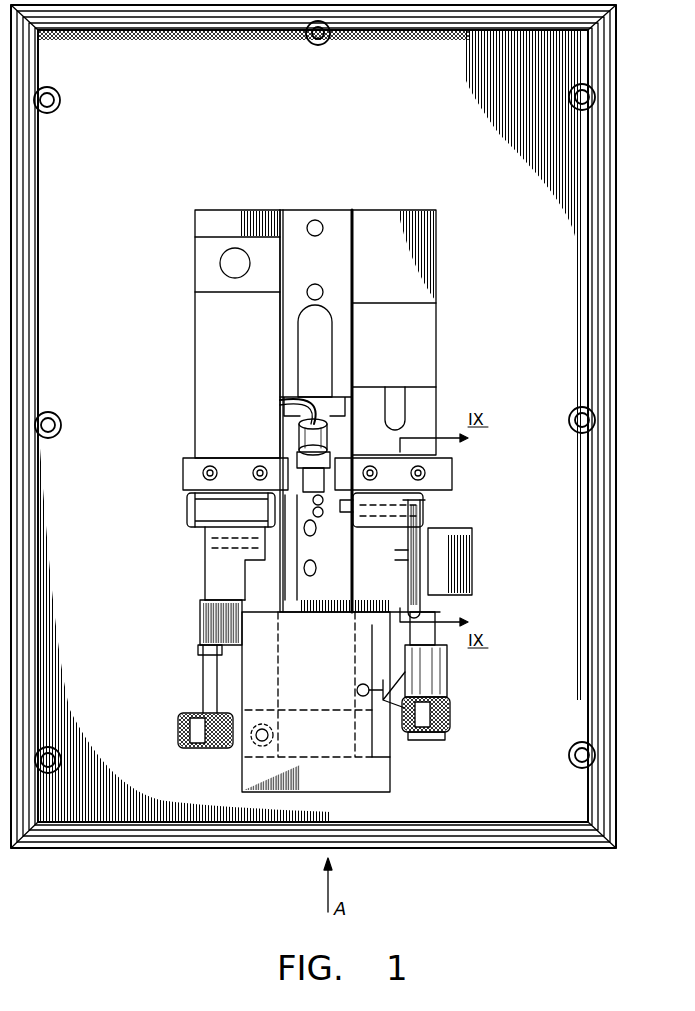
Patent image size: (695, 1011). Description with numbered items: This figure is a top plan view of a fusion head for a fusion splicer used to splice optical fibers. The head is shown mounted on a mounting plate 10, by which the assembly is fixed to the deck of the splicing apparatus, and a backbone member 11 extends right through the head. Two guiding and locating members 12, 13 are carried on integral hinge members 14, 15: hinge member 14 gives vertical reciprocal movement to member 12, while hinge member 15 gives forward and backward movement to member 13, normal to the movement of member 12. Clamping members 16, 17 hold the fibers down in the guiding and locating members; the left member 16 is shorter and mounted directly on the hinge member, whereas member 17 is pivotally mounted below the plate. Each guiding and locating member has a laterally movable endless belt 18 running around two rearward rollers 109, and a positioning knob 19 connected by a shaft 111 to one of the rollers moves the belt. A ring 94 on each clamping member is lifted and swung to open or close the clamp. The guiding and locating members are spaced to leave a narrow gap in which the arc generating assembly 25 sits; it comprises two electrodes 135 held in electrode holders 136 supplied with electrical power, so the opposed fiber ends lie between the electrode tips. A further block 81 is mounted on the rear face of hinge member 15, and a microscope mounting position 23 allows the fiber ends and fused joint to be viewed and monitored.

The mounting plate 10 is at (550, 218).
The backbone member 11 is at (322, 232).
The guiding and locating member 12 is at (190, 472).
The guiding and locating member 13 is at (437, 480).
The hinge member 14 is at (205, 332).
The hinge member 15 is at (420, 388).
The clamping member 16 is at (232, 603).
The clamping member 17 is at (413, 552).
The endless belt 18 is at (192, 520).
The positioning knob 19 is at (180, 735).
The microscope mounting position 23 is at (265, 765).
The arc generating assembly 25 is at (322, 494).
The block 81 is at (425, 240).
The ring 94 is at (472, 584).
The rollers 109 is at (205, 477).
The shaft 111 is at (205, 680).
The electrodes 135 is at (260, 462).
The electrode holders 136 is at (350, 418).